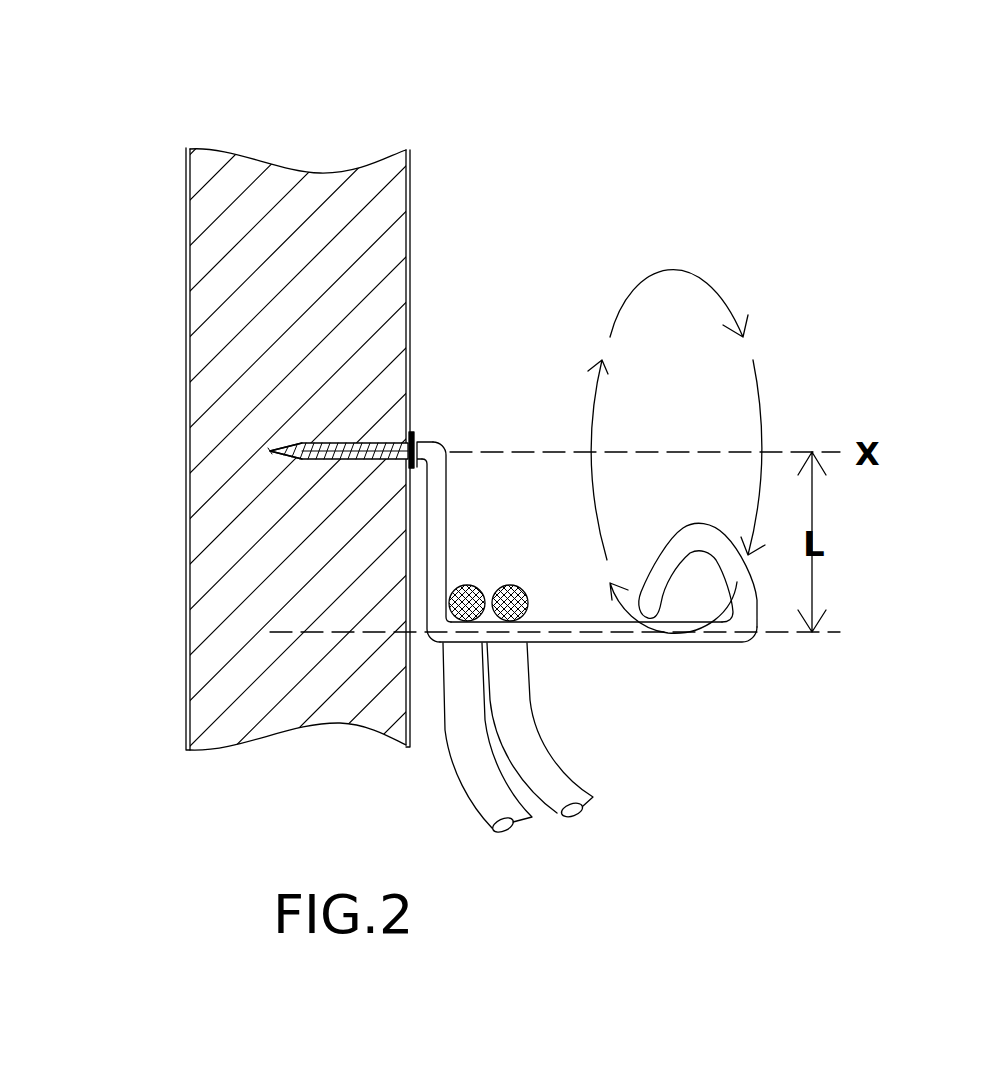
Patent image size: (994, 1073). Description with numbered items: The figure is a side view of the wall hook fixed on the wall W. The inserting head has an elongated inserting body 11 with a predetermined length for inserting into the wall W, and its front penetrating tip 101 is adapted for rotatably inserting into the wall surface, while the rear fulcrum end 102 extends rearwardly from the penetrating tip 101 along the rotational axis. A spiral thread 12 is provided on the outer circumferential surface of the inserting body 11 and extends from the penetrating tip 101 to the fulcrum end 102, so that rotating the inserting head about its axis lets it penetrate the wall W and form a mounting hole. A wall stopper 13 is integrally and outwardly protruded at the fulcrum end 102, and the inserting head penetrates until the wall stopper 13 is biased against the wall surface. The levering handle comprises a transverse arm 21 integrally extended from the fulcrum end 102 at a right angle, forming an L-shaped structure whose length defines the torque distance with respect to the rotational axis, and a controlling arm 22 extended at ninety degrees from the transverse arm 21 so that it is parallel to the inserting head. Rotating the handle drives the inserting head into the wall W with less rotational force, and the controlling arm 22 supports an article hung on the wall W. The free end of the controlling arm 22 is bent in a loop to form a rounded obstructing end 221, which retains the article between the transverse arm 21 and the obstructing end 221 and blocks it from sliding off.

The wall W is at (303, 200).
The inserting body 11 is at (342, 435).
The penetrating tip 101 is at (262, 445).
The fulcrum end 102 is at (415, 425).
The spiral thread 12 is at (267, 447).
The wall stopper 13 is at (414, 437).
The transverse arm 21 is at (428, 543).
The controlling arm 22 is at (583, 643).
The obstructing end 221 is at (647, 562).